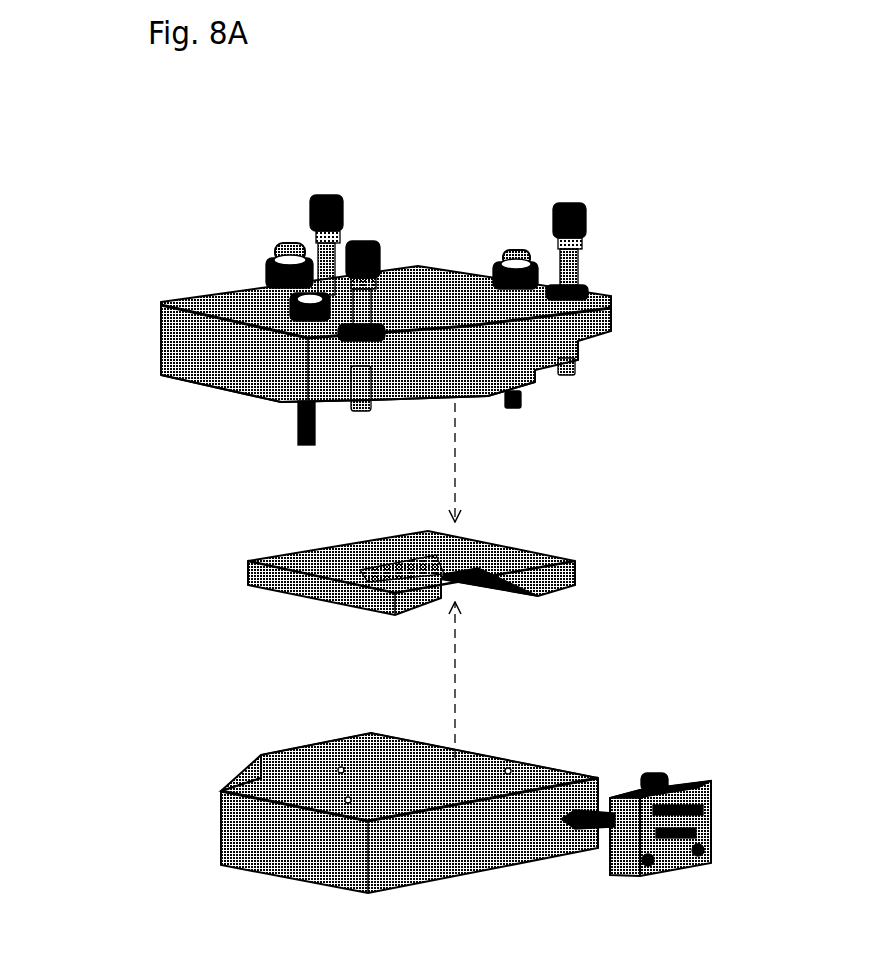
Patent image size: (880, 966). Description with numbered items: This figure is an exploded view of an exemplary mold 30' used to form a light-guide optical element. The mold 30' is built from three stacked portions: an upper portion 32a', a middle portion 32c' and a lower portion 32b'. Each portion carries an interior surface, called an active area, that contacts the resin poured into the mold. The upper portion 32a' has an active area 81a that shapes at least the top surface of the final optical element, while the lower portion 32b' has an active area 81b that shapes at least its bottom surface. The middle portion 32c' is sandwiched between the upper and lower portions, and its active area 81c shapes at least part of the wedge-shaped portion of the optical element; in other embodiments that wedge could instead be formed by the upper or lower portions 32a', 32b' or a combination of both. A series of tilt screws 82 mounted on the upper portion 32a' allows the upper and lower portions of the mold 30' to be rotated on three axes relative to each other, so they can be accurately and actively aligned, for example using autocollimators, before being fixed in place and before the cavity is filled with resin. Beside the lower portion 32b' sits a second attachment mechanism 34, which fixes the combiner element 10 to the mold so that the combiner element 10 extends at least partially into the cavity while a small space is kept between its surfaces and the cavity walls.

The mold 30' is at (327, 494).
The tilt screws 82 is at (521, 189).
The upper portion 32a' is at (336, 372).
The active area 81a is at (482, 390).
The middle portion 32c' is at (374, 594).
The active area 81c is at (426, 568).
The active area 81b is at (462, 760).
The lower portion 32b' is at (364, 785).
The second attachment mechanism 34 is at (674, 750).
The combiner element 10 is at (581, 824).